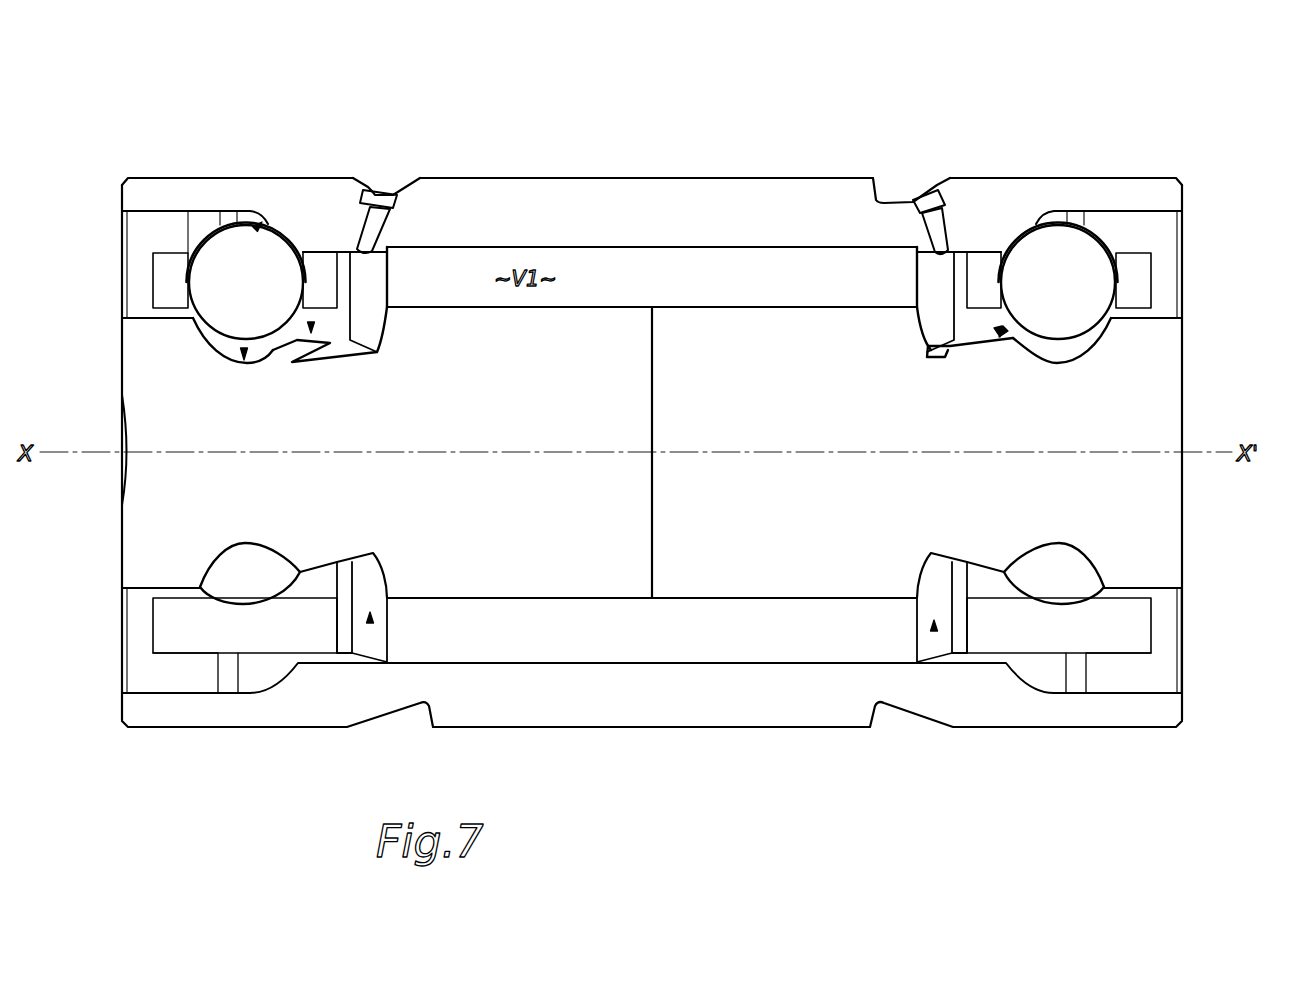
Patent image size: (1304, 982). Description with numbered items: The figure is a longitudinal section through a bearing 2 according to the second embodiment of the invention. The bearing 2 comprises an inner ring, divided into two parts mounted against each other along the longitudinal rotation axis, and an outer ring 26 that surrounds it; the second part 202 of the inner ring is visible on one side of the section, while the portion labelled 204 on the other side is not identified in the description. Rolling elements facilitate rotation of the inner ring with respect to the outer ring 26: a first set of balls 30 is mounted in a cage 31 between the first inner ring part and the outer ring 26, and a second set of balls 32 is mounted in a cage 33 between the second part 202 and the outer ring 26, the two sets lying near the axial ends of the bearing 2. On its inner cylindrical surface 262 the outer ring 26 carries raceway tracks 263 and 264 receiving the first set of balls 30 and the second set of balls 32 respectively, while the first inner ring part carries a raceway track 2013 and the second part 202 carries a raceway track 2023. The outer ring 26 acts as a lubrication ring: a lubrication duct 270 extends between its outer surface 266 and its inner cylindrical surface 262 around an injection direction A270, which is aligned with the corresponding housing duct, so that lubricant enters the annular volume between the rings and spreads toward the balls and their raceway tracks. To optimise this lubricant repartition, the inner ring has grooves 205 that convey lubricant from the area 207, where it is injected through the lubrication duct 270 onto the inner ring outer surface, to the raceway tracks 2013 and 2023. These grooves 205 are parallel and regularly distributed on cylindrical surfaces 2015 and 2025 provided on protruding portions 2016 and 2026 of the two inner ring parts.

The bearing 2 is at (1193, 108).
The outer ring 26 is at (1186, 212).
The first set of balls 30 is at (253, 590).
The cage 31 is at (152, 280).
The second set of balls 32 is at (1080, 587).
The cage 33 is at (1185, 642).
The second part of inner ring 202 is at (775, 575).
The left hub portion 204 is at (600, 570).
The grooves 205 is at (300, 366).
The area where lubricant is injected 207 is at (370, 625).
The inner cylindrical surface 262 is at (668, 249).
The raceway track 263 is at (236, 282).
The raceway track 264 is at (1062, 290).
The outer surface 266 is at (706, 170).
The lubrication duct 270 is at (360, 246).
The longitudinal axis or injection direction A270 is at (383, 188).
The raceway track 2013 is at (237, 248).
The cylindrical surface 2015 is at (311, 324).
The protruding portion 2016 is at (395, 386).
The raceway track 2023 is at (1152, 285).
The cylindrical surface 2025 is at (1086, 333).
The protruding portion 2026 is at (1020, 388).